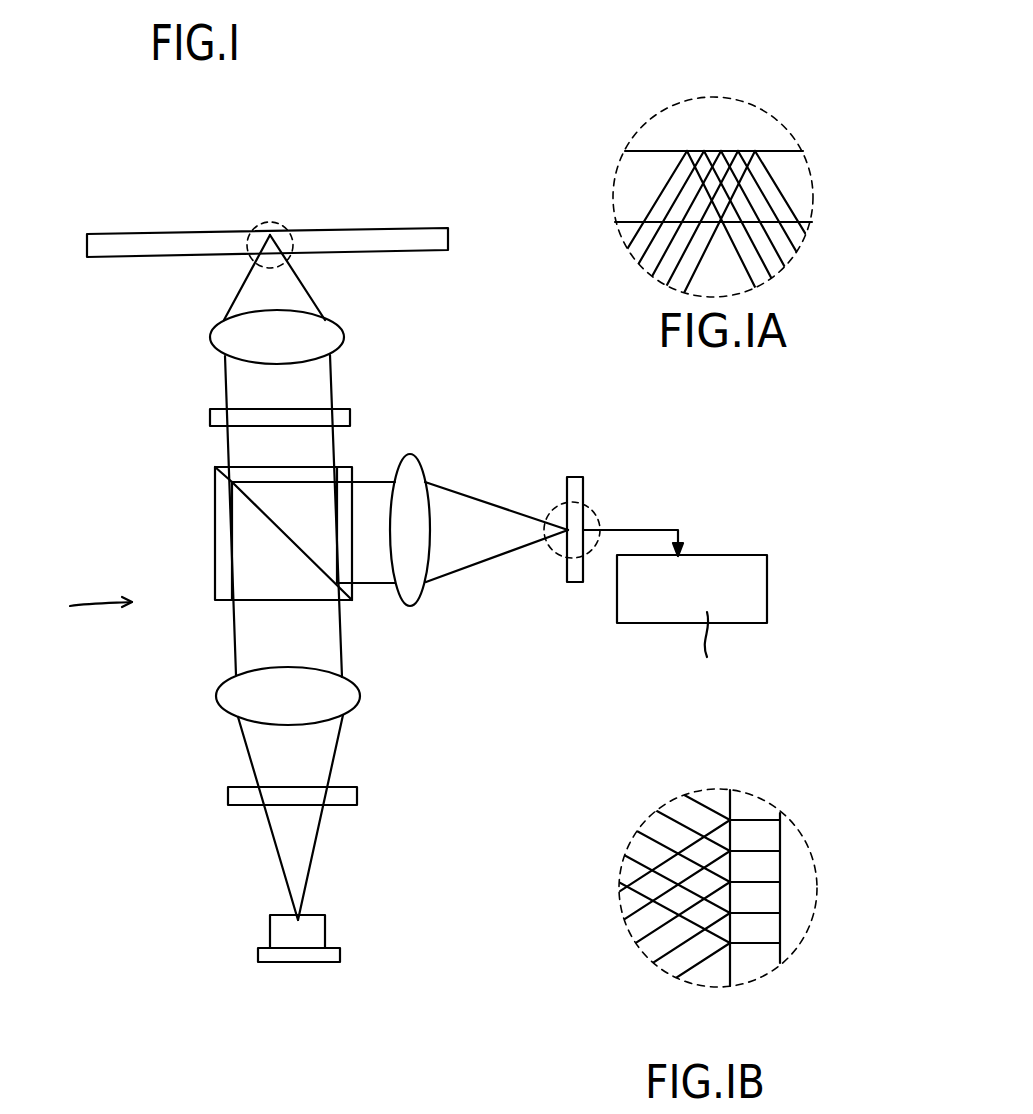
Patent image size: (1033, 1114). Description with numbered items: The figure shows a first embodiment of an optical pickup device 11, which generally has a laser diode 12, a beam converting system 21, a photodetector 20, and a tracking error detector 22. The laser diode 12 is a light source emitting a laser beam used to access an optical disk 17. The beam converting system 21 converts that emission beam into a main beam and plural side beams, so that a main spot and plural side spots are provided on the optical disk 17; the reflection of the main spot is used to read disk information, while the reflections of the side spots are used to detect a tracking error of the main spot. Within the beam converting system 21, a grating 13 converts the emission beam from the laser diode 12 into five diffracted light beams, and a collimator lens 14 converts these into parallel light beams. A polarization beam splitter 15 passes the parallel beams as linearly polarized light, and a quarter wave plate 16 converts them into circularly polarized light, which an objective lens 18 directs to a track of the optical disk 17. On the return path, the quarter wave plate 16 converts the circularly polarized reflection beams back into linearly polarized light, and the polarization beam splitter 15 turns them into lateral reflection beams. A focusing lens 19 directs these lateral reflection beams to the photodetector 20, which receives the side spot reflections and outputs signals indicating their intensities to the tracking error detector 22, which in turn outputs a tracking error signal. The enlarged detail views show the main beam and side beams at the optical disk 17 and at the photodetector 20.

In FIG. 1, the optical pickup device 11 is at (200, 125).
In FIG. 1, the laser diode 12 is at (275, 937).
In FIG. 1, the grating 13 is at (228, 797).
In FIG. 1, the collimator lens 14 is at (218, 695).
In FIG. 1, the polarization beam splitter 15 is at (220, 550).
In FIG. 1, the quarter wave plate 16 is at (210, 420).
In FIG. 1, the optical disk 17 is at (202, 240).
In FIG. 1A, the optical disk 17 is at (635, 163).
In FIG. 1, the objective lens 18 is at (220, 348).
In FIG. 1, the focusing lens 19 is at (407, 458).
In FIG. 1, the photodetector 20 is at (568, 488).
In FIG. 1B, the photodetector 20 is at (763, 972).
In FIG. 1, the beam converting system 21 is at (82, 603).
In FIG. 1, the tracking error detector 22 is at (712, 553).